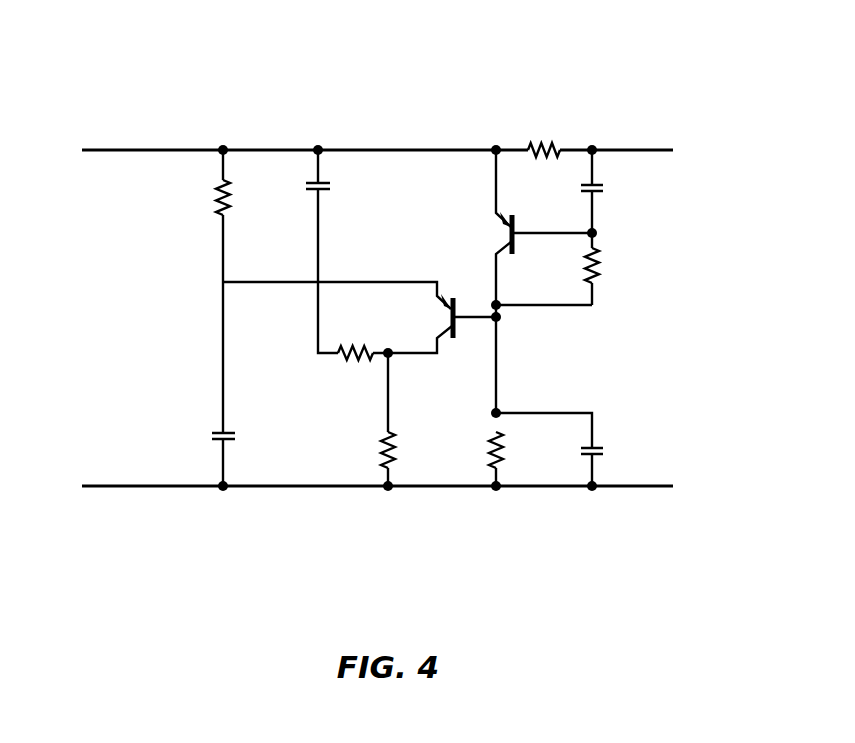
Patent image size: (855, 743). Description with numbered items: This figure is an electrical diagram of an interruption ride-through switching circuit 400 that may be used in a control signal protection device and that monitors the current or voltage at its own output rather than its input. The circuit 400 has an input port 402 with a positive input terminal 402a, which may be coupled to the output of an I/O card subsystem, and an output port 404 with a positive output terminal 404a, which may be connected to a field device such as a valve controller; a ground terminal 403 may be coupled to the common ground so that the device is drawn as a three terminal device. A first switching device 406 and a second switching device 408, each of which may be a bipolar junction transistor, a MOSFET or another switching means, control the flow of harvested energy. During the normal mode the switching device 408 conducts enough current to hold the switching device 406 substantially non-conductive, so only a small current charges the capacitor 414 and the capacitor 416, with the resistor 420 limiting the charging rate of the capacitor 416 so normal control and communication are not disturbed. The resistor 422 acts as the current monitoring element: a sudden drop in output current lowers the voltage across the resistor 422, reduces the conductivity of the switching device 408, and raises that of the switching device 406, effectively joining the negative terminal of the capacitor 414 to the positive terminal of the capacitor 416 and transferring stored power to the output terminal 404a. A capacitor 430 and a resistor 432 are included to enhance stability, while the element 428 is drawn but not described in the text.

The interruption ride-through switching circuit 400 is at (406, 272).
The input port 402 is at (135, 298).
The positive input terminal 402a is at (175, 150).
The ground terminal 403 is at (140, 488).
The output port 404 is at (707, 307).
The positive output terminal 404a is at (667, 148).
The first switching device 406 is at (455, 338).
The second switching device 408 is at (515, 249).
The capacitor 414 is at (317, 181).
The capacitor 416 is at (228, 443).
The resistor 420 is at (383, 466).
The resistor 422 is at (528, 145).
The capacitor 428 is at (596, 182).
The capacitor 430 is at (587, 455).
The resistor 432 is at (338, 358).